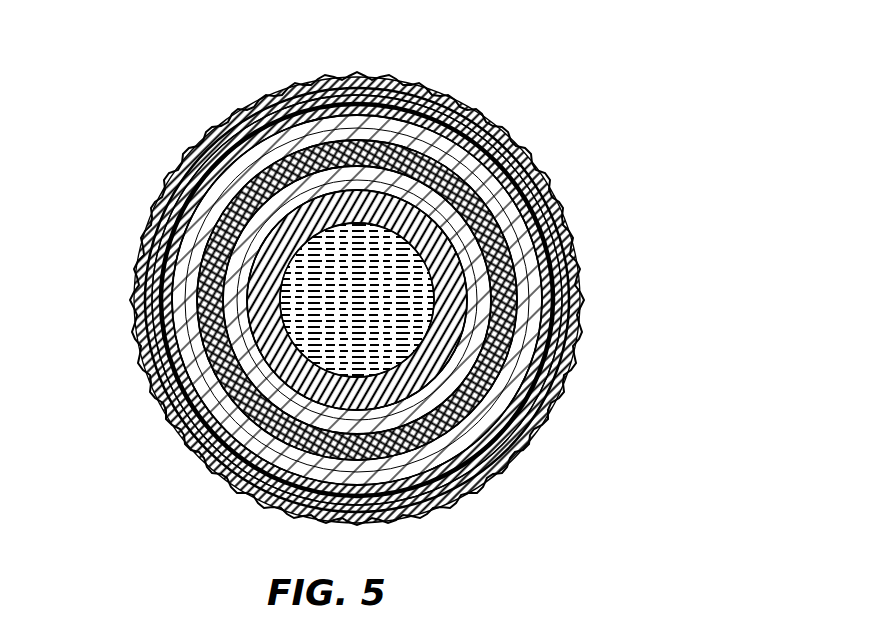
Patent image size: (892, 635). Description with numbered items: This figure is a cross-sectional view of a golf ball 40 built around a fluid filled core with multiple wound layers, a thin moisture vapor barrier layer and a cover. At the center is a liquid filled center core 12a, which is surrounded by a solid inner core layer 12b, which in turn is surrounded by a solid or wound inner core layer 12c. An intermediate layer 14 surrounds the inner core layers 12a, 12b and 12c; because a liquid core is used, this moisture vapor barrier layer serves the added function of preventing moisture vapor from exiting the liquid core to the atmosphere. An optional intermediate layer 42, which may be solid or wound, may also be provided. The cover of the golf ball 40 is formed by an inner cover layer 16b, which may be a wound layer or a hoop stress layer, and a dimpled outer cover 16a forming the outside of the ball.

The golf ball 40 is at (597, 237).
The liquid filled center core 12a is at (178, 410).
The solid inner core layer 12b is at (480, 478).
The inner core layer 12c is at (215, 237).
The intermediate layer 14 is at (170, 205).
The dimpled outer cover 16a is at (515, 134).
The inner cover layer 16b is at (268, 97).
The optional intermediate layer 42 is at (322, 106).